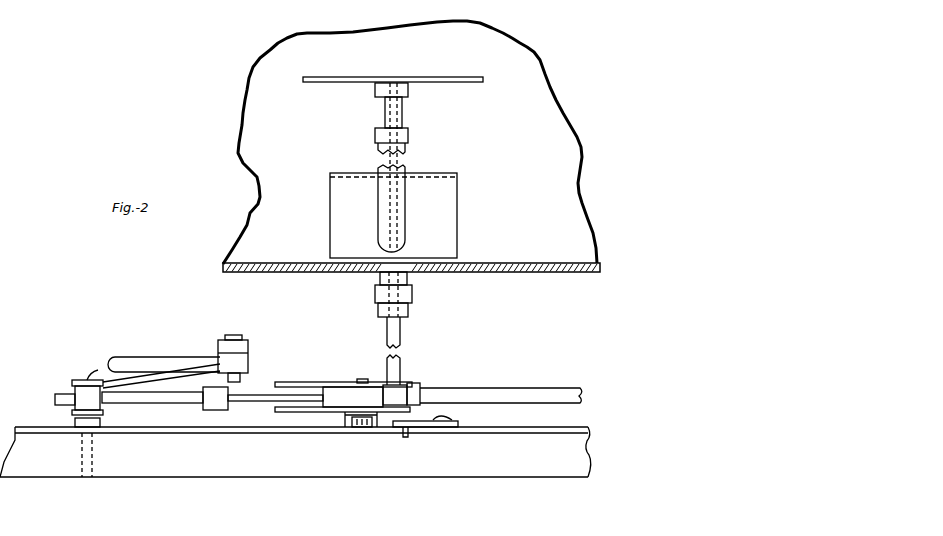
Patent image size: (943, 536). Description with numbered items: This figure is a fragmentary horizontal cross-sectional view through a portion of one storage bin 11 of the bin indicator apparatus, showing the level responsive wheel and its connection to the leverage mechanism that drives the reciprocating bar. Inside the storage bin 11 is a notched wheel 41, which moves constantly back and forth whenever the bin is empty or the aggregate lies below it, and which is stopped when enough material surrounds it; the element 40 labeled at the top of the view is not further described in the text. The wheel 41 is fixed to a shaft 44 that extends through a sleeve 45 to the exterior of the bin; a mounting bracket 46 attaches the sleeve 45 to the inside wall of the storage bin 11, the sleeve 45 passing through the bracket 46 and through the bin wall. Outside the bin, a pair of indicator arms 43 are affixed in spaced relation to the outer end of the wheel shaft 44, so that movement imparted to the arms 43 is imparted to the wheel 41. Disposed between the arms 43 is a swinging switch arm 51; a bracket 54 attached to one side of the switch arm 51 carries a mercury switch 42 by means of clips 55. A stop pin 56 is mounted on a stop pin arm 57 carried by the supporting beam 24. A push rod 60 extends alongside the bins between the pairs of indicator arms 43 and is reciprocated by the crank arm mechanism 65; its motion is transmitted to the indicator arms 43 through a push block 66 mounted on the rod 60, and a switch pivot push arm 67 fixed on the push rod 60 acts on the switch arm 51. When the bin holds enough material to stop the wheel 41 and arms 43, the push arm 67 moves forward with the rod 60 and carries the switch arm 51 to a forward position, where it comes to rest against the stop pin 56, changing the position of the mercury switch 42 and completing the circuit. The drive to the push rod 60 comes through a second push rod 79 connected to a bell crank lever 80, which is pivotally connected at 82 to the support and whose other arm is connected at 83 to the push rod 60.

The storage bin 11 is at (553, 122).
The supporting beam 24 is at (590, 453).
The top plate 40 is at (480, 66).
The notched wheel 41 is at (483, 81).
The mercury switch 42 is at (360, 427).
The indicator arm 43 is at (300, 382).
The shaft 44 is at (393, 122).
The sleeve 45 is at (405, 137).
The mounting bracket 46 is at (447, 207).
The swinging switch arm 51 is at (337, 393).
The bracket 54 is at (348, 418).
The clip 55 is at (355, 427).
The stop pin 56 is at (407, 437).
The stop pin arm 57 is at (452, 420).
The push rod 60 is at (560, 395).
The crank arm mechanism 65 is at (135, 348).
The push block 66 is at (417, 392).
The switch pivot push arm 67 is at (253, 397).
The second push rod 79 is at (243, 363).
The bell crank lever 80 is at (110, 373).
The pivotal connection 82 is at (87, 378).
The connection 83 is at (80, 397).